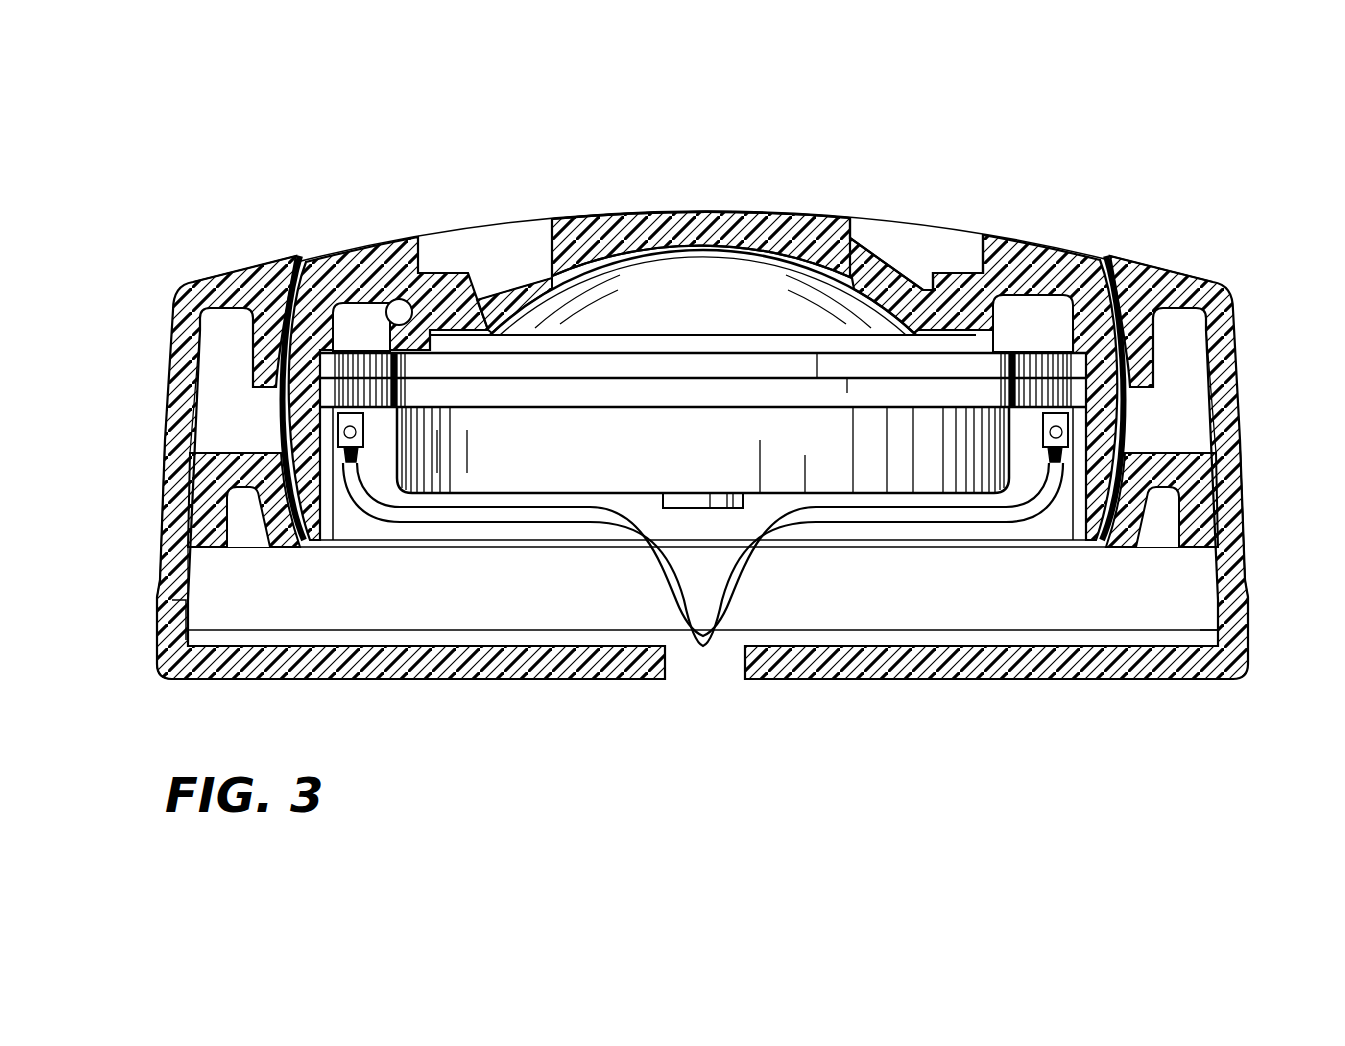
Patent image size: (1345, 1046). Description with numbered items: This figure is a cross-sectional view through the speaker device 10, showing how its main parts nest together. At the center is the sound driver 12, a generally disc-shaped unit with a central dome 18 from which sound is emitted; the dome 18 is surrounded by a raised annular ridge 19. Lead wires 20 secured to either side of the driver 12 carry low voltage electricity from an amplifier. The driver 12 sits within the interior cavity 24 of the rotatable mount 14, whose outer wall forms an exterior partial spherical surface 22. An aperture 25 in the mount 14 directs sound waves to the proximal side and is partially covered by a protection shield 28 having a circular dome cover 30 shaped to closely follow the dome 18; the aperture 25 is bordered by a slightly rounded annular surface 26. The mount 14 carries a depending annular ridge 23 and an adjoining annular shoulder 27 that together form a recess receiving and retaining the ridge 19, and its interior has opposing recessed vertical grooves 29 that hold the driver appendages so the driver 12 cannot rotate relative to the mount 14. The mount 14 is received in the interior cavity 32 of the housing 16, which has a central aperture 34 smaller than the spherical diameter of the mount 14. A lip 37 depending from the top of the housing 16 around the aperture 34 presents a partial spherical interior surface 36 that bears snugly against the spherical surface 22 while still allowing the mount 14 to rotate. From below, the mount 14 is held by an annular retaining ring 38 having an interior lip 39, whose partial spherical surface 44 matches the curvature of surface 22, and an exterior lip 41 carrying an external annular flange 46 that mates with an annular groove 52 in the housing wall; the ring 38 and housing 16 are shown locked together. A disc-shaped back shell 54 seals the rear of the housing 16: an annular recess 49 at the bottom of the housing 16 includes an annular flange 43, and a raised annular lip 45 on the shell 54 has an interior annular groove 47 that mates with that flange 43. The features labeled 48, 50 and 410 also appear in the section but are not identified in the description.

The speaker device 10 is at (128, 126).
The sound driver 12 is at (833, 460).
The rotatable mount 14 is at (340, 248).
The housing 16 is at (1250, 318).
The central dome 18 is at (766, 285).
The raised annular ridge 19 is at (598, 343).
The lead wires 20 is at (682, 578).
The exterior partial spherical surface 22 is at (282, 387).
The depending annular ridge 23 is at (390, 297).
The interior cavity 24 is at (487, 530).
The aperture 25 is at (520, 240).
The rounded annular surface 26 is at (1046, 240).
The annular shoulder 27 is at (484, 328).
The protection shield 28 is at (726, 205).
The recessed vertical grooves 29 is at (330, 527).
The circular dome cover 30 is at (679, 216).
The interior cavity 32 is at (990, 585).
The central aperture 34 is at (937, 200).
The interior surface 36 is at (178, 287).
The lip 37 is at (243, 354).
The annular ring 38 is at (228, 443).
The interior lip 39 is at (285, 546).
The exterior lip 41 is at (160, 583).
The annular flange 43 is at (188, 607).
The partial spherical surface 44 is at (205, 457).
The raised annular lip 45 is at (1200, 617).
The external annular flange 46 is at (1240, 503).
The annular groove 47 is at (1240, 615).
The tooth 48 is at (243, 533).
The annular recess 49 is at (158, 592).
The rib 50 is at (197, 512).
The annular groove 52 is at (163, 518).
The back shell 54 is at (150, 690).
The groove 410 is at (180, 555).